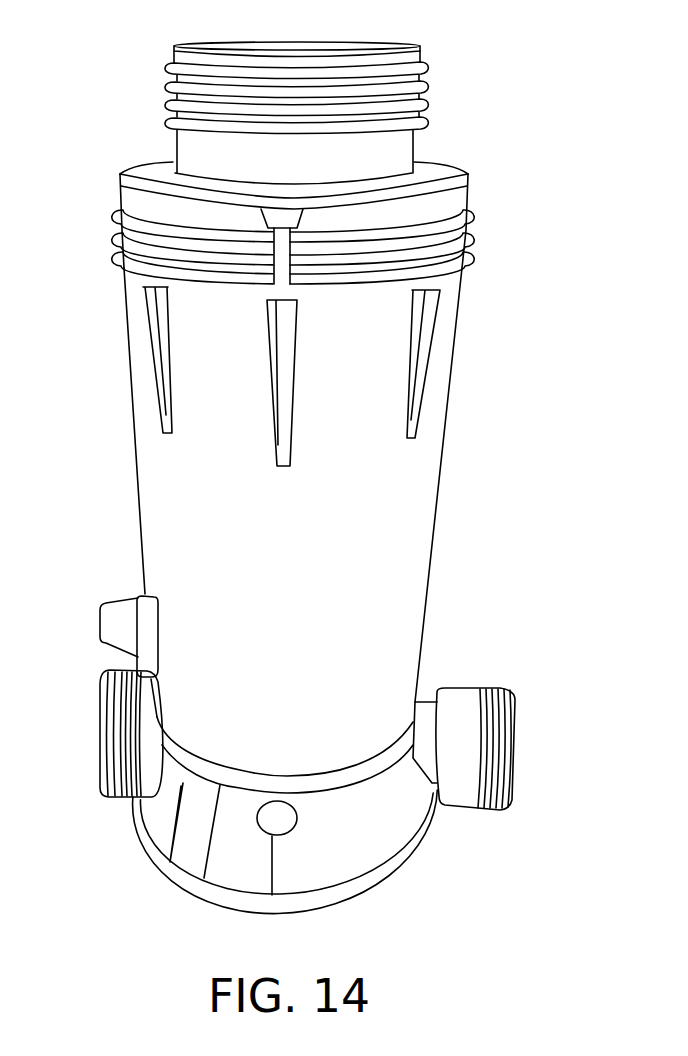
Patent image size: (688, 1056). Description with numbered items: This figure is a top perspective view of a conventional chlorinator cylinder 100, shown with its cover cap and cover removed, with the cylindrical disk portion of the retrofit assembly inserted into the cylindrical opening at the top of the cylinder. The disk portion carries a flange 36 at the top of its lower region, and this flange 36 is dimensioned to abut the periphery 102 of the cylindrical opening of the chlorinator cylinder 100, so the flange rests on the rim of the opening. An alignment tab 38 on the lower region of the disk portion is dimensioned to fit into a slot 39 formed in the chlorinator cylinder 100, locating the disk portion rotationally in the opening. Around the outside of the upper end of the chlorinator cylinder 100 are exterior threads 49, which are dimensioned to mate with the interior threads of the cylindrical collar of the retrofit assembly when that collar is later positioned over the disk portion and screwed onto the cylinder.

The flange 36 is at (432, 168).
The alignment tab 38 is at (265, 184).
The slot 39 is at (263, 228).
The exterior threads 49 is at (472, 217).
The chlorinator cylinder 100 is at (165, 530).
The periphery 102 is at (468, 190).